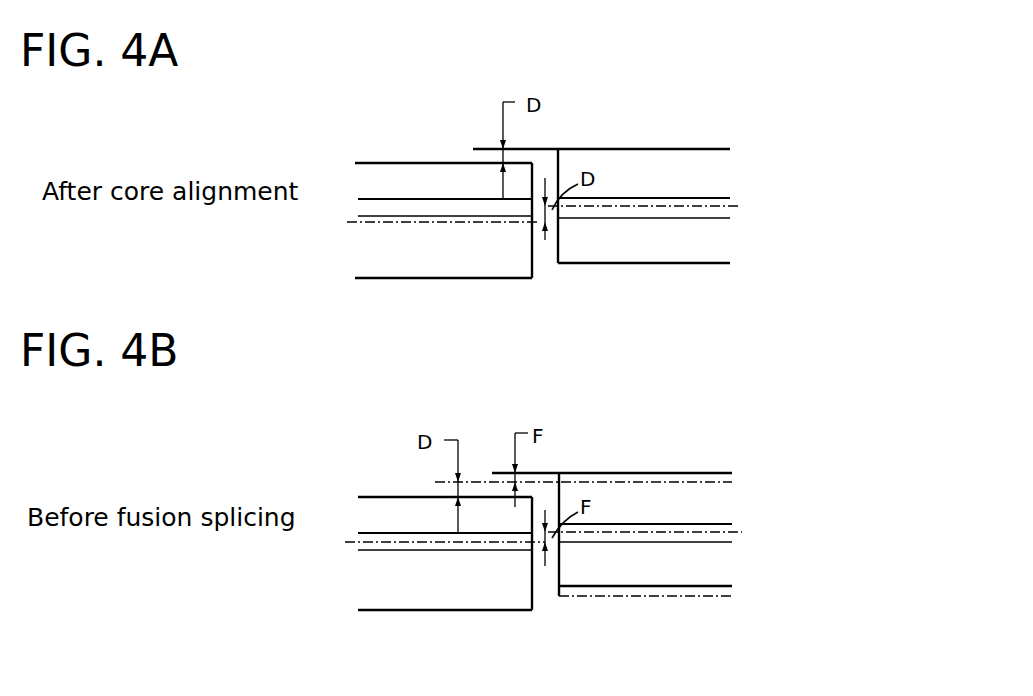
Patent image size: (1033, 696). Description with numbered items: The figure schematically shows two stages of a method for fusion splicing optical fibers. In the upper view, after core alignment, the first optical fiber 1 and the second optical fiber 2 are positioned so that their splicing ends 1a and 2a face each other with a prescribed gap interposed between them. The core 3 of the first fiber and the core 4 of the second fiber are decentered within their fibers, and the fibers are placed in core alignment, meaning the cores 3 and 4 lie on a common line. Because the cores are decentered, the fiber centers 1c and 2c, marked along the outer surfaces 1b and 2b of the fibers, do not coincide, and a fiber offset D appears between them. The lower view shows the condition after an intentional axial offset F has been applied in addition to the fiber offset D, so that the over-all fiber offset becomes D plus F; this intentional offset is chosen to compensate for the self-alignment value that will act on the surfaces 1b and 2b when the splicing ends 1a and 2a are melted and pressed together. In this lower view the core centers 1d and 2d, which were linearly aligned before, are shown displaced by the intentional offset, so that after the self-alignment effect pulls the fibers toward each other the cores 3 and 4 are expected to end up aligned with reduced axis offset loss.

In FIG. 4A, the first optical fiber 1 is at (392, 160).
In FIG. 4B, the first optical fiber 1 is at (396, 492).
In FIG. 4A, the splicing end of the first optical fiber 1a is at (532, 264).
In FIG. 4B, the splicing end of the first optical fiber 1a is at (532, 597).
In FIG. 4A, the surface of the first optical fiber 1b is at (373, 279).
In FIG. 4B, the surface of the first optical fiber 1b is at (373, 612).
In FIG. 4A, the fiber center of the first optical fiber 1c is at (345, 224).
In FIG. 4B, the core center of the first optical fiber 1d is at (345, 544).
In FIG. 4A, the second optical fiber 2 is at (660, 145).
In FIG. 4B, the second optical fiber 2 is at (696, 469).
In FIG. 4A, the splicing end of the second optical fiber 2a is at (558, 250).
In FIG. 4B, the splicing end of the second optical fiber 2a is at (559, 588).
In FIG. 4A, the surface of the second optical fiber 2b is at (636, 264).
In FIG. 4B, the surface of the second optical fiber 2b is at (677, 587).
In FIG. 4A, the fiber center of the second optical fiber 2c is at (738, 207).
In FIG. 4B, the core center of the second optical fiber 2d is at (742, 533).
In FIG. 4A, the core of the first optical fiber 3 is at (432, 209).
In FIG. 4B, the core of the first optical fiber 3 is at (447, 548).
In FIG. 4A, the core of the second optical fiber 4 is at (672, 214).
In FIG. 4B, the core of the second optical fiber 4 is at (700, 544).